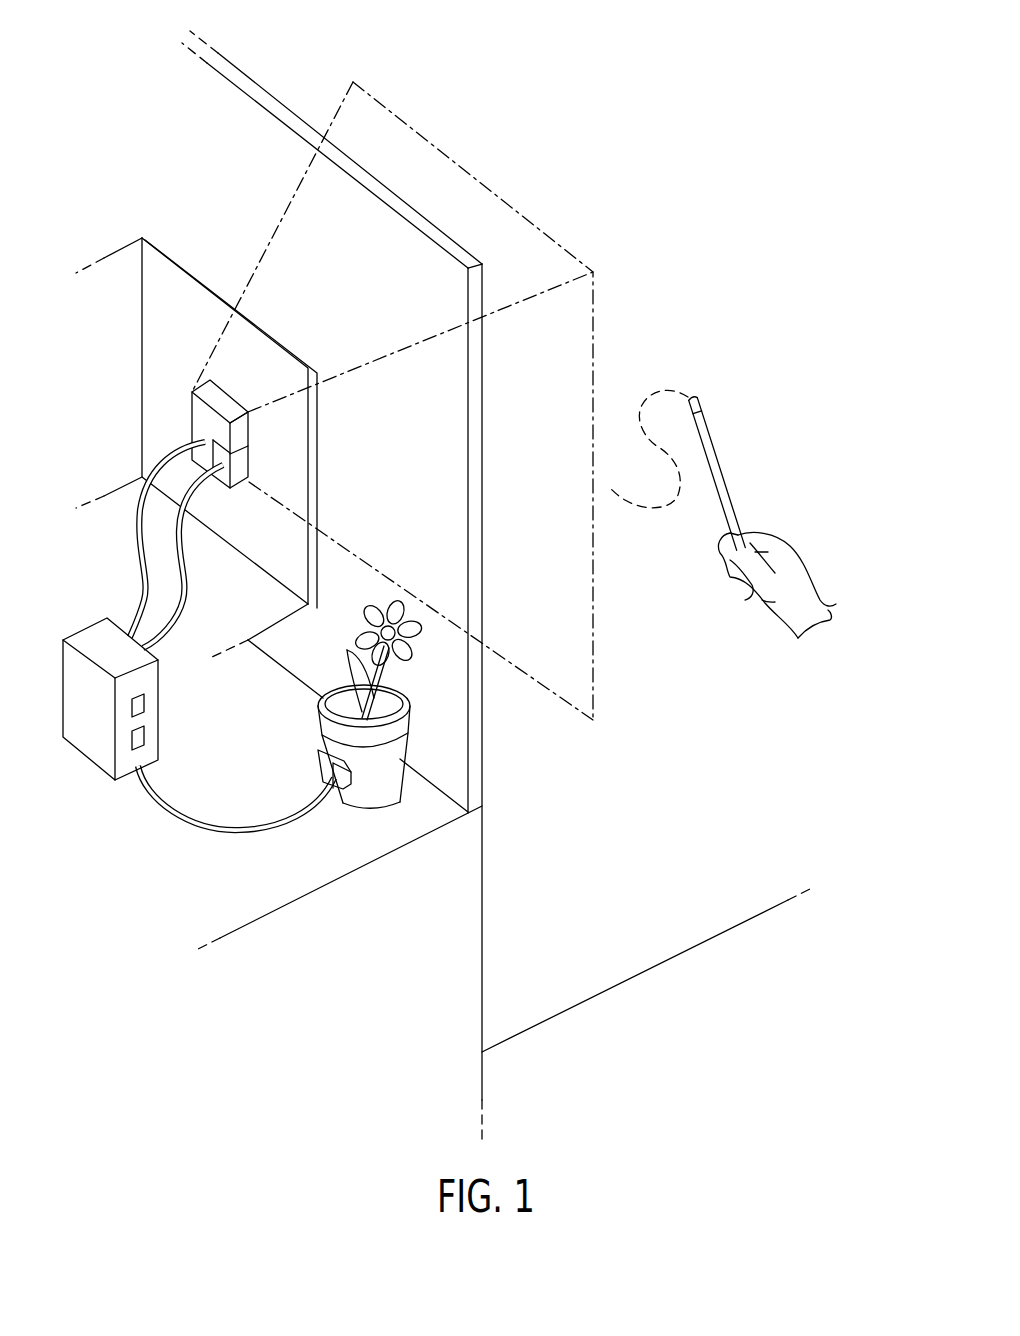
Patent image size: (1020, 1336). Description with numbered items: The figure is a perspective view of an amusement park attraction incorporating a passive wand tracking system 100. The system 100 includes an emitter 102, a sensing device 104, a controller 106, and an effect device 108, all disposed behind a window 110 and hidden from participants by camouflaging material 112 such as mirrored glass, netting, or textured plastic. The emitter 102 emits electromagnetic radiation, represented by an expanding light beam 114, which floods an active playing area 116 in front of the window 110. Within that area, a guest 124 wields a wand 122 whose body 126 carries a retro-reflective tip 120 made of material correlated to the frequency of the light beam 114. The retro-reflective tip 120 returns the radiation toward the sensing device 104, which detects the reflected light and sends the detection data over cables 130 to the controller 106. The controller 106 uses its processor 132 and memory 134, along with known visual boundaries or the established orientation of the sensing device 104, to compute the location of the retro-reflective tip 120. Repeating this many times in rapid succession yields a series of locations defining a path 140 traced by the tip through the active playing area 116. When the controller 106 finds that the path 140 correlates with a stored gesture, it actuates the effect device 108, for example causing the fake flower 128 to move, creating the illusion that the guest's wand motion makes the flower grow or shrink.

The system 100 is at (76, 808).
The emitter 102 is at (190, 414).
The sensing device 104 is at (221, 490).
The controller 106 is at (85, 710).
The effect device 108 is at (376, 777).
The window 110 is at (483, 767).
The camouflaging material 112 is at (318, 486).
The light beam 114 is at (474, 178).
The active playing area 116 is at (733, 875).
The retro-reflective tip 120 is at (700, 403).
The wand 122 is at (697, 503).
The guest 124 is at (780, 620).
The body 126 is at (722, 470).
The fake flower 128 is at (355, 673).
The cables 130 is at (188, 602).
The processor 132 is at (146, 700).
The memory 134 is at (146, 737).
The path 140 is at (647, 397).